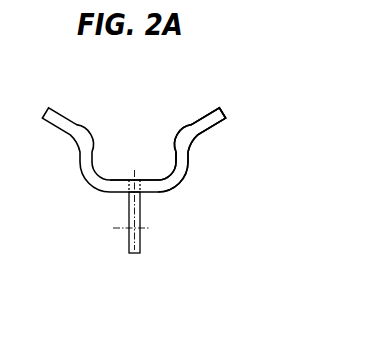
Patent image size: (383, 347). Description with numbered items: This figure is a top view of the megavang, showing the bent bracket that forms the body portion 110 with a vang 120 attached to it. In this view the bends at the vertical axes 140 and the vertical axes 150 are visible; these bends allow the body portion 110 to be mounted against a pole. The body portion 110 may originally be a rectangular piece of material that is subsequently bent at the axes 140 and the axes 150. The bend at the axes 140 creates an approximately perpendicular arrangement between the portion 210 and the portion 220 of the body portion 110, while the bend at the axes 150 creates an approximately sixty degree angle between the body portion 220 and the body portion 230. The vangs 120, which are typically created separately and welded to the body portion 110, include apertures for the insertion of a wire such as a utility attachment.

The body portion 110 is at (110, 192).
The vangs 120 is at (129, 250).
The vertical axes 140 is at (175, 174).
The vertical axes 150 is at (178, 137).
The portion 210 is at (148, 180).
The portion 220 is at (173, 150).
The body portion 230 is at (211, 109).